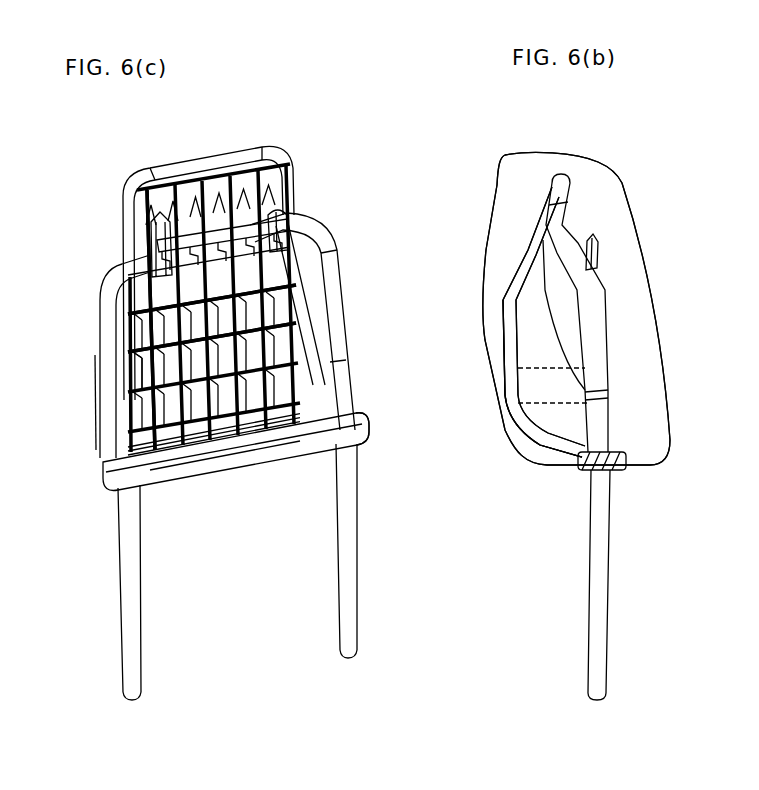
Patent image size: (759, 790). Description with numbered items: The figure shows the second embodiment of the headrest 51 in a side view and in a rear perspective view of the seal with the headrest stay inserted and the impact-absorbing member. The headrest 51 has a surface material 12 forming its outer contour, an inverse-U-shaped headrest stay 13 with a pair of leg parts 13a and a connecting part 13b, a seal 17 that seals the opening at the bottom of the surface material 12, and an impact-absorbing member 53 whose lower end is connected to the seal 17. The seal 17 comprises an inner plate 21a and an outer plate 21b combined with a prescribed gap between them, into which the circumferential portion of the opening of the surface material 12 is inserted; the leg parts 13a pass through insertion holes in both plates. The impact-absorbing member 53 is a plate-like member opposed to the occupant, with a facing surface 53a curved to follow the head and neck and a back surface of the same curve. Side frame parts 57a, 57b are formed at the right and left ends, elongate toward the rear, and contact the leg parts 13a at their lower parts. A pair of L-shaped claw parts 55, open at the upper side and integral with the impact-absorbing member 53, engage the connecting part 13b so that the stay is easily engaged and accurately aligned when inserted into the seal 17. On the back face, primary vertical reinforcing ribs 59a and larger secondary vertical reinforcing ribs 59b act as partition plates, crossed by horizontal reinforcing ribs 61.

In FIG. 6b, the surface material 12 is at (660, 330).
The headrest stay 13 is at (353, 246).
The leg part 13a is at (130, 598).
In FIG. 6b, the leg part 13a is at (602, 588).
In FIG. 6b, the connecting part 13b is at (585, 202).
The seal 17 is at (378, 406).
In FIG. 6b, the seal 17 is at (628, 481).
The inner plate 21a is at (348, 442).
The outer plate 21b is at (205, 470).
In FIG. 6b, the headrest 51 is at (617, 130).
The impact-absorbing member 53 is at (213, 128).
In FIG. 6b, the impact-absorbing member 53 is at (492, 359).
In FIG. 6b, the facing surface 53a is at (533, 243).
The claw part 55 is at (152, 268).
In FIG. 6b, the claw part 55 is at (598, 244).
The side frame part 57a is at (92, 382).
In FIG. 6b, the side frame part 57a is at (550, 390).
The side frame part 57b is at (293, 338).
In FIG. 6b, the side frame part 57b is at (533, 418).
The primary vertical reinforcing rib 59a is at (303, 367).
The secondary vertical reinforcing rib 59b is at (148, 333).
The horizontal reinforcing rib 61 is at (123, 346).